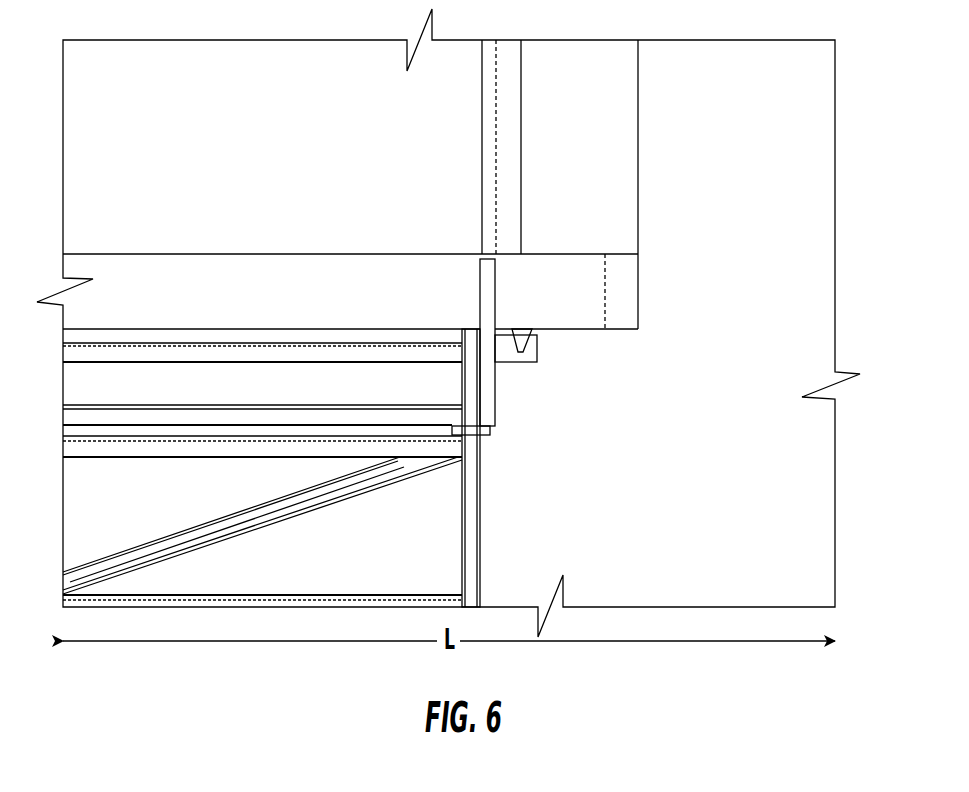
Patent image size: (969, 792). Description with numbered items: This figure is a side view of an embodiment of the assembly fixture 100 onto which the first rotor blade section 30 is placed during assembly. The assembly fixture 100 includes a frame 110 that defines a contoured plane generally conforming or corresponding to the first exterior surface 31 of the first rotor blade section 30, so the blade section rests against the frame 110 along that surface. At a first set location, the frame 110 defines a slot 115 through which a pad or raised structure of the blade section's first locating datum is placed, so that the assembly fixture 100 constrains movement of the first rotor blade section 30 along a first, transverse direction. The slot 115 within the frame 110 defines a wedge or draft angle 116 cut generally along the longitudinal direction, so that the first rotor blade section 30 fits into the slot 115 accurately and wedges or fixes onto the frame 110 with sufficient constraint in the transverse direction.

The first rotor blade section 30 is at (620, 177).
The first exterior surface 31 is at (593, 292).
The assembly fixture 100 is at (510, 506).
The frame 110 is at (499, 403).
The slot 115 is at (519, 352).
The wedge or draft angle 116 is at (524, 348).